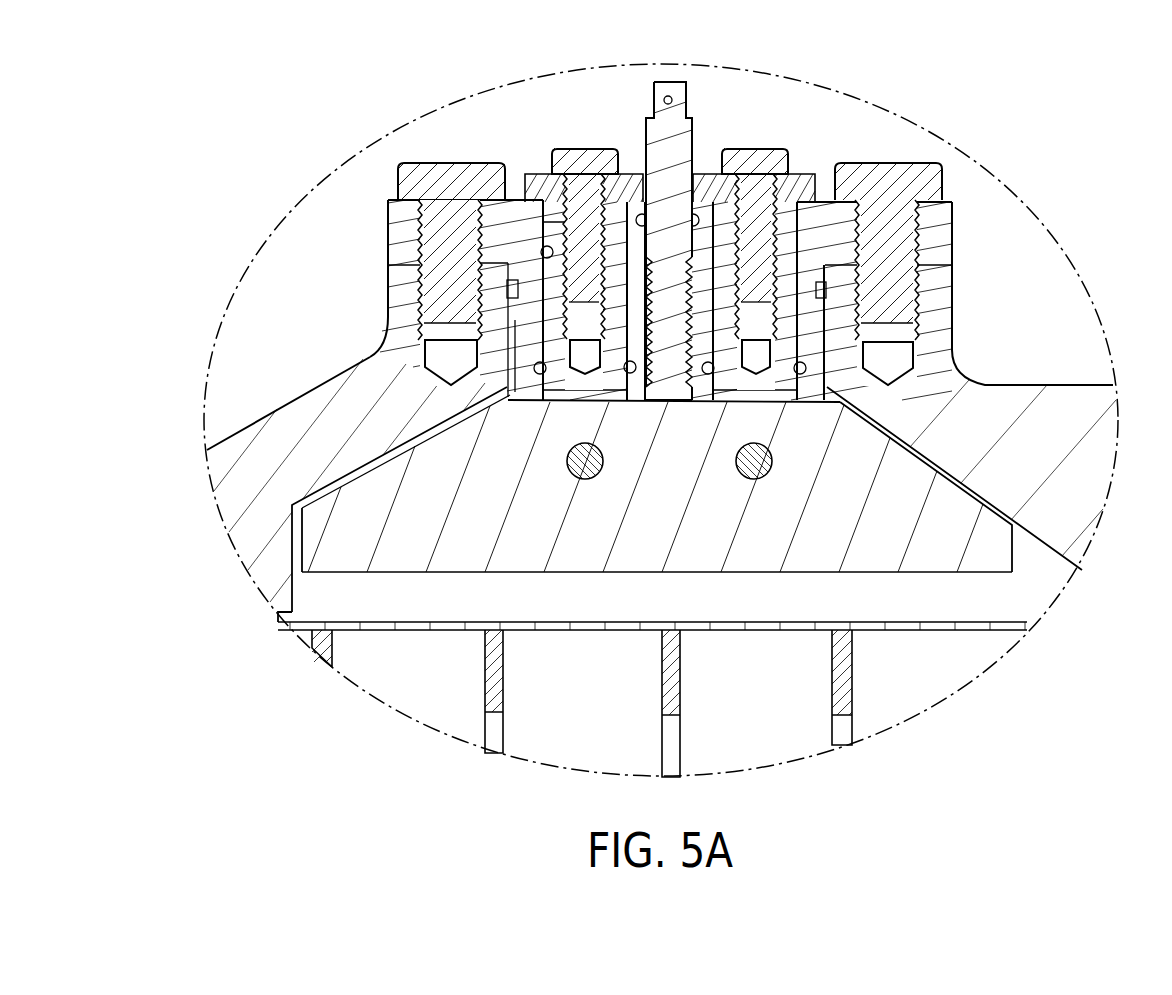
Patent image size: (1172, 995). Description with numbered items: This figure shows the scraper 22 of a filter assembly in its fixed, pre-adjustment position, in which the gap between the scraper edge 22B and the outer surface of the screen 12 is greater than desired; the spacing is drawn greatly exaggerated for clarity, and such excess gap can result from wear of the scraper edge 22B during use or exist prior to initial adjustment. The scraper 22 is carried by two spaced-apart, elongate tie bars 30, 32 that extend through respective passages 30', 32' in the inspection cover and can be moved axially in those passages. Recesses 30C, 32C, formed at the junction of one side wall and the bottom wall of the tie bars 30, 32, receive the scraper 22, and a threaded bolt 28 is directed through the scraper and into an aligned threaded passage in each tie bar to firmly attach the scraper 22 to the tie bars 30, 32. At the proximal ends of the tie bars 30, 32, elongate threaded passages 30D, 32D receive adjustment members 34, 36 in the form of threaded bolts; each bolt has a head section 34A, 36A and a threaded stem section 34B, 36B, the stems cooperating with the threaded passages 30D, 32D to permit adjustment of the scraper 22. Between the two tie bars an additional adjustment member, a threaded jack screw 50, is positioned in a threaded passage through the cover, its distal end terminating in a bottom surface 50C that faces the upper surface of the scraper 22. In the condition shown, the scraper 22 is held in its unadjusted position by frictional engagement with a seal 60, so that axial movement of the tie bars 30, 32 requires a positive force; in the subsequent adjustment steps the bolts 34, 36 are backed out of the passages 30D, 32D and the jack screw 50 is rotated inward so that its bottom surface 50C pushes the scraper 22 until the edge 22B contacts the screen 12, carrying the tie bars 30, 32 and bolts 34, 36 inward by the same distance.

The screen 12 is at (990, 626).
The scraper 22 is at (985, 490).
The scraper edge 22B is at (882, 573).
The threaded bolt 28 is at (572, 459).
The tie bar 30 is at (976, 301).
The recess 30C is at (775, 397).
The threaded passage 30D is at (805, 337).
The passage 30' is at (957, 274).
The tie bar 32 is at (352, 300).
The recess 32C is at (560, 398).
The threaded passage 32D is at (540, 338).
The passage 32' is at (392, 274).
The adjustment member 34 is at (778, 130).
The head section 34A is at (770, 323).
The threaded stem section 34B is at (790, 240).
The adjustment member 36 is at (610, 136).
The head section 36A is at (578, 160).
The threaded stem section 36B is at (587, 327).
The threaded jack screw 50 is at (688, 75).
The bottom surface 50C is at (677, 395).
The seal 60 is at (545, 394).